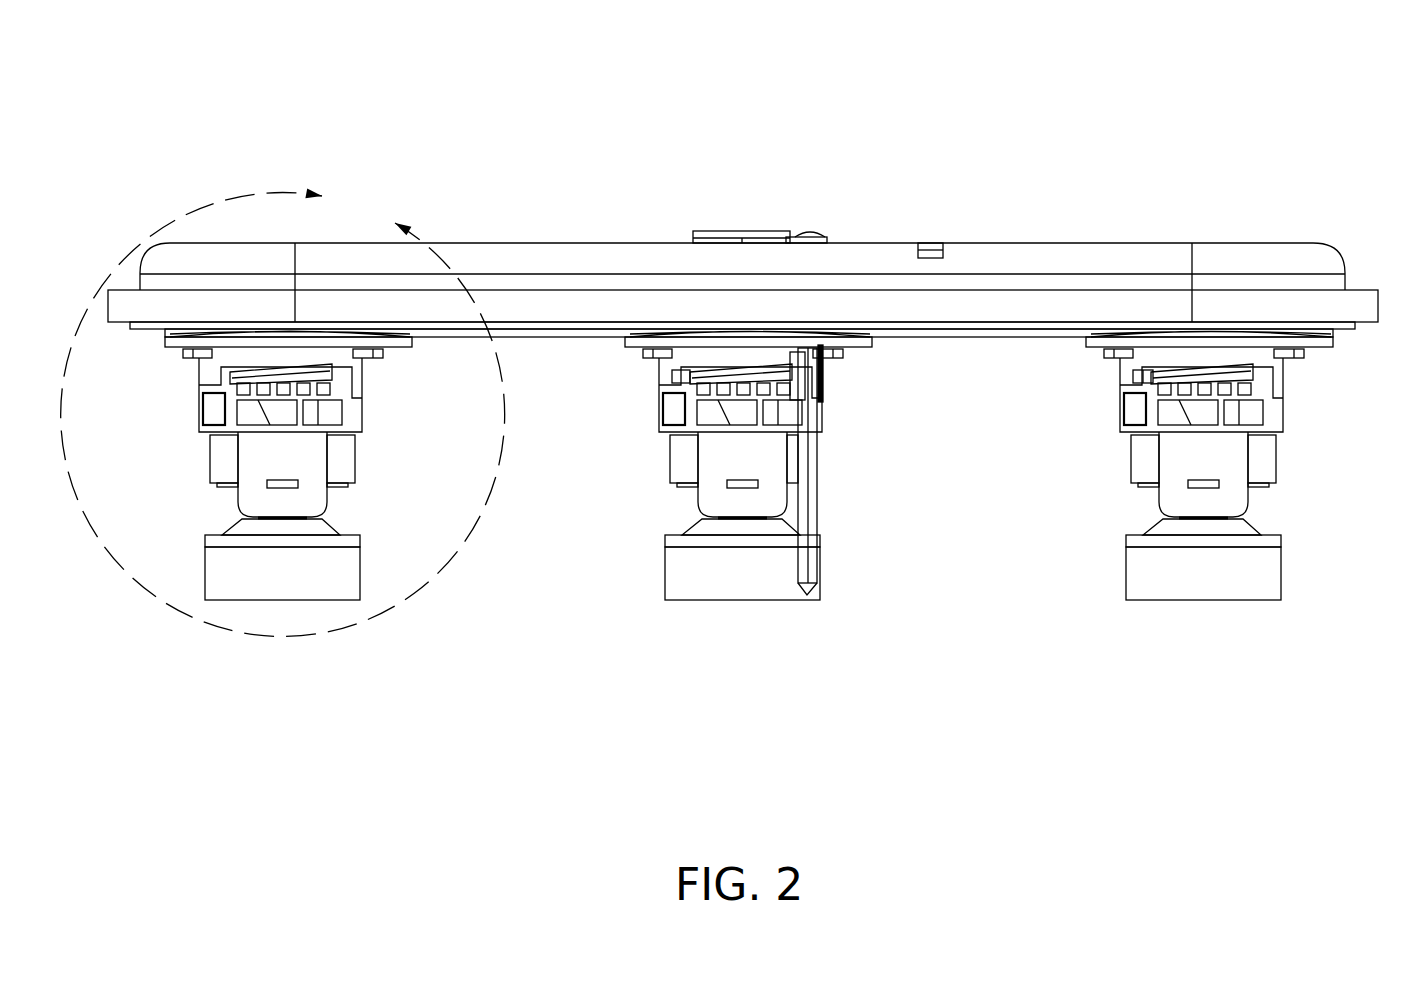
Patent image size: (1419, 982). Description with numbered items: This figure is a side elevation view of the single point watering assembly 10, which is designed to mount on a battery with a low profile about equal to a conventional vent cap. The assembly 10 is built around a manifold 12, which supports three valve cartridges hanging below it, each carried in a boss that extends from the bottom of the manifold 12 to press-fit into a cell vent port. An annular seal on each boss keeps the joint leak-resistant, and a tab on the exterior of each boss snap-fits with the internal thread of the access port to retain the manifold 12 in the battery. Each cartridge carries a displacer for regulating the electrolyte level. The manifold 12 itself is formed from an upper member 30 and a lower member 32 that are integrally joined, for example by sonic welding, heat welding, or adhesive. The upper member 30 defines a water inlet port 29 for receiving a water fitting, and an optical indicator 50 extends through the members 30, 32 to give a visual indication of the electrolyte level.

The single point watering assembly 10 is at (1106, 128).
The manifold 12 is at (966, 236).
The water inlet port 29 is at (737, 231).
The upper member 30 is at (1278, 255).
The lower member 32 is at (1312, 341).
The optical indicator 50 is at (814, 232).